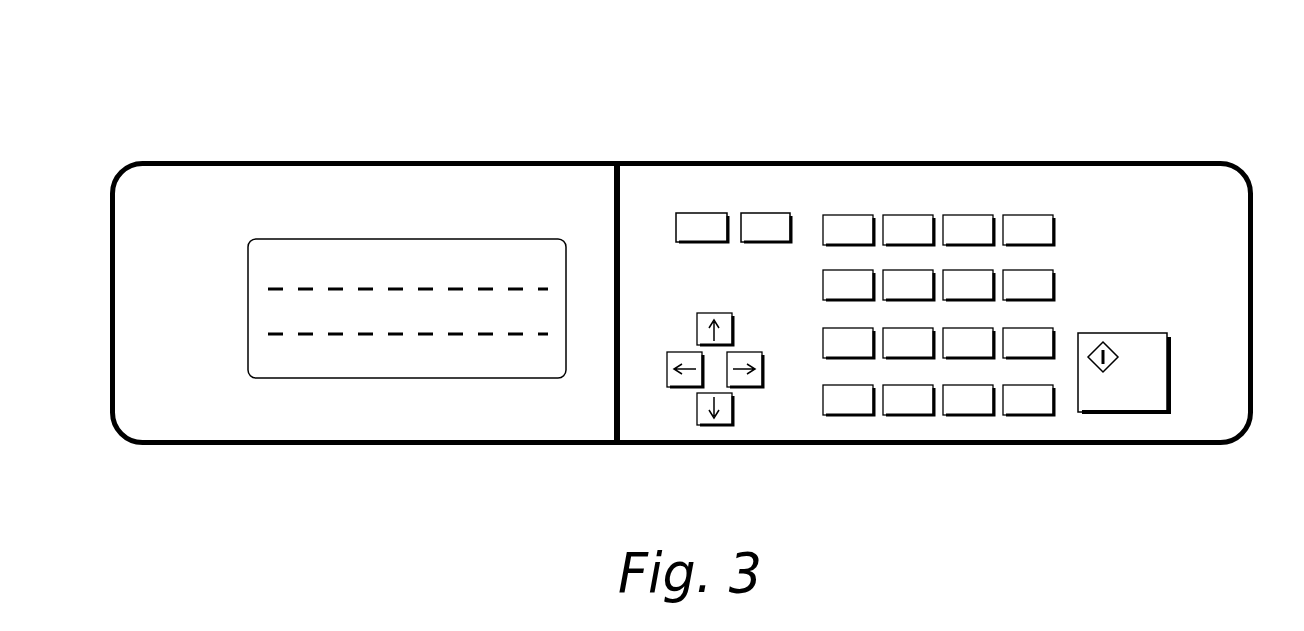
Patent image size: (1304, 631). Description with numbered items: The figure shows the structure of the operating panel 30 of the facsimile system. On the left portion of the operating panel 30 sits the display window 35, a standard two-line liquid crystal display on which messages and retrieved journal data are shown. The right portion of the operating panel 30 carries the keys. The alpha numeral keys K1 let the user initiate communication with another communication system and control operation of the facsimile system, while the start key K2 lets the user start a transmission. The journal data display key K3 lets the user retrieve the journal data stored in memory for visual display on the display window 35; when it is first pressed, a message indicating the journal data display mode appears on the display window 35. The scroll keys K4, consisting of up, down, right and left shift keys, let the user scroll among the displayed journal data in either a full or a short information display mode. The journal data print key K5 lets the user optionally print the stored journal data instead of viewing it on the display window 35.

The operating panel 30 is at (1125, 116).
The display window 35 is at (380, 239).
The alpha numeral keys K1 is at (949, 202).
The start key K2 is at (1148, 412).
The journal data display key K3 is at (694, 213).
The scroll keys K4 is at (742, 395).
The journal data print key K5 is at (768, 213).